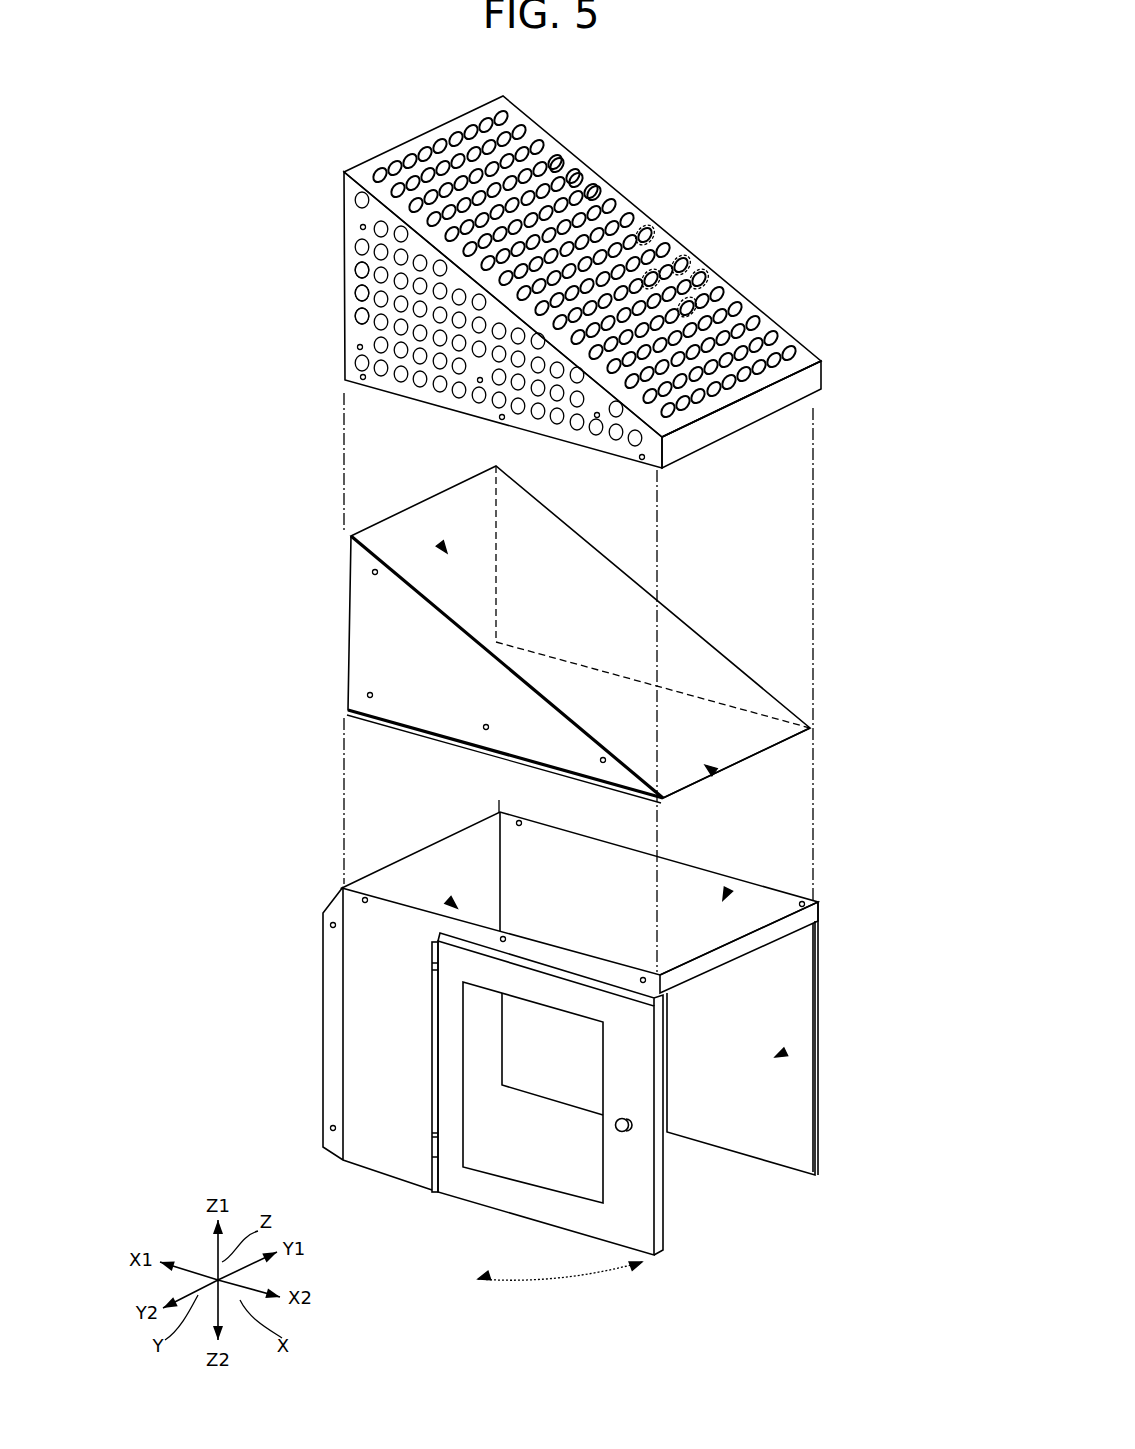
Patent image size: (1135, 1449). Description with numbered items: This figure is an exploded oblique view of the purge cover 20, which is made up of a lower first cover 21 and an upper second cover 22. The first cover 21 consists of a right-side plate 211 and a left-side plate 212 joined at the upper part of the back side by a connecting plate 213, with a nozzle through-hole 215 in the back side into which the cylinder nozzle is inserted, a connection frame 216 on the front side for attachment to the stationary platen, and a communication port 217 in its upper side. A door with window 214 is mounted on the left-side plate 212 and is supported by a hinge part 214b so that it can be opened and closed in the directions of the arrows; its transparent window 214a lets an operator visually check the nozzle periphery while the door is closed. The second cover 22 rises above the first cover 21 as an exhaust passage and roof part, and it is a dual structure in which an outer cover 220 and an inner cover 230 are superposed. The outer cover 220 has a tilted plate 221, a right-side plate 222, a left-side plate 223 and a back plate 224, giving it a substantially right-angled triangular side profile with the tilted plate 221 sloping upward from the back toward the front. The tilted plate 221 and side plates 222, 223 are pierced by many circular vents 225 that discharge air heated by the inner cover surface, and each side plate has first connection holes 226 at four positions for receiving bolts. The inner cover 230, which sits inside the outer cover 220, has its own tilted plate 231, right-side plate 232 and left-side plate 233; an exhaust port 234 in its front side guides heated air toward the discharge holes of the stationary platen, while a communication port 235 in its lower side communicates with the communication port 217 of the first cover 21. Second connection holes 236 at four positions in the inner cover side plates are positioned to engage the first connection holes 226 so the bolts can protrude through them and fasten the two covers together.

The purge cover 20 is at (858, 90).
The first cover 21 is at (922, 810).
The second cover 22 is at (922, 95).
The right-side plate 211 is at (820, 995).
The left-side plate 212 is at (372, 1035).
The connecting plate 213 is at (800, 921).
The door with window 214 is at (478, 1198).
The window 214a is at (545, 1172).
The hinge part 214b is at (433, 982).
The nozzle through-hole 215 is at (785, 1053).
The connection frame 216 is at (452, 903).
The communication port 217 is at (728, 892).
The outer cover 220 is at (232, 95).
The tilted plate 221 is at (512, 112).
The right-side plate 222 is at (773, 330).
The left-side plate 223 is at (350, 343).
The back plate 224 is at (803, 376).
The vents 225 is at (595, 191).
The first connection holes 226 is at (360, 228).
The inner cover 230 is at (232, 478).
The tilted plate 231 is at (595, 575).
The right-side plate 232 is at (695, 655).
The left-side plate 233 is at (352, 650).
The exhaust port 234 is at (445, 550).
The communication port 235 is at (715, 772).
The second connection holes 236 is at (372, 573).